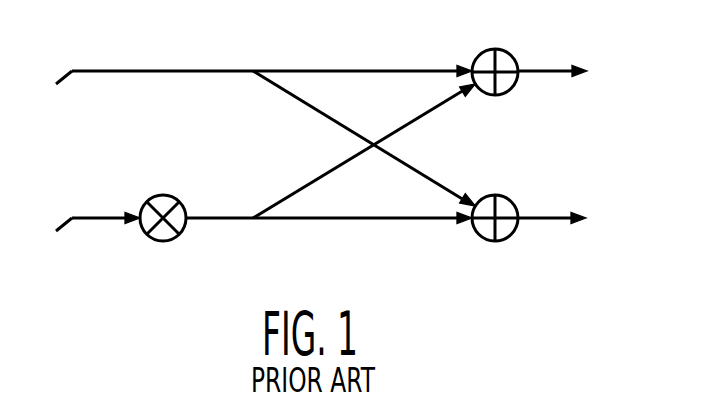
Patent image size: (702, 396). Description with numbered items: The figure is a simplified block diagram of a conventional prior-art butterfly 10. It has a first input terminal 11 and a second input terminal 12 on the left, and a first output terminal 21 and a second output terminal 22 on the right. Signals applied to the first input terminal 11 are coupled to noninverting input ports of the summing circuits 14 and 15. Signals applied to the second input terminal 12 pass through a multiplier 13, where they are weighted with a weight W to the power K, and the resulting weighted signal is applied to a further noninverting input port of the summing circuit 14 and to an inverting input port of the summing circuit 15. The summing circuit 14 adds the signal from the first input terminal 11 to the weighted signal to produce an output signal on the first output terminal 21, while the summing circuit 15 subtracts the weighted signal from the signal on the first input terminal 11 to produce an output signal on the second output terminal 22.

The butterfly 10 is at (323, 277).
The first input terminal 11 is at (72, 71).
The second input terminal 12 is at (72, 218).
The multiplier 13 is at (165, 195).
The summing circuit 14 is at (505, 48).
The summing circuit 15 is at (507, 195).
The first output terminal 21 is at (572, 68).
The second output terminal 22 is at (574, 213).